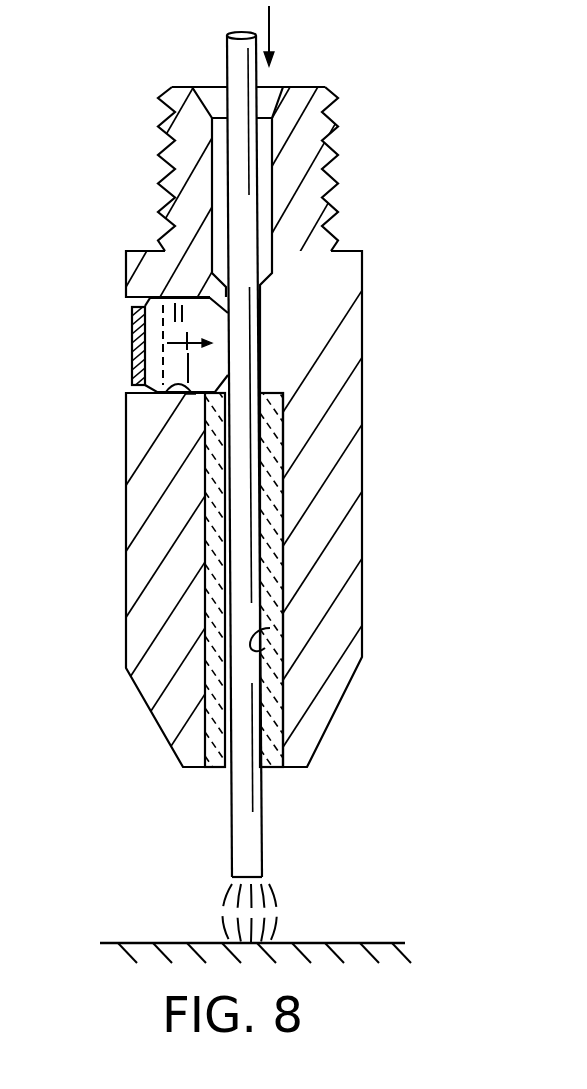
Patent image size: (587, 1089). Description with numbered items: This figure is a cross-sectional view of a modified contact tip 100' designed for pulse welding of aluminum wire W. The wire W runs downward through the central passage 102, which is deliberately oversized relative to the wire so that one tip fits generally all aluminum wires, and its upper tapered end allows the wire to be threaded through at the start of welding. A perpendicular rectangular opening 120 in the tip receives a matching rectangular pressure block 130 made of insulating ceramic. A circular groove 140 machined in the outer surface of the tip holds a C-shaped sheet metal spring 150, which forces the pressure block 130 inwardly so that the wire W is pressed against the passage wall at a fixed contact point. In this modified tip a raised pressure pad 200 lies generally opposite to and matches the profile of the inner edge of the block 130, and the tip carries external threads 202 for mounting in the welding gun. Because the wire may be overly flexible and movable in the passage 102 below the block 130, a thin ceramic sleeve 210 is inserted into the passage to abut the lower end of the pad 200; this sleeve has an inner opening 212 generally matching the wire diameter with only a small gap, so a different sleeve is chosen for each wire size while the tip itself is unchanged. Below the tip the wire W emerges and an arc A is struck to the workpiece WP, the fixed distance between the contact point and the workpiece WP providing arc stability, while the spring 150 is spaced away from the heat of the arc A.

The modified contact tip 100' is at (234, 481).
The central passage 102 is at (194, 545).
The rectangular opening 120 is at (165, 392).
The pressure block 130 is at (183, 405).
The circular groove 140 is at (132, 300).
The C-shaped sheet metal spring 150 is at (120, 354).
The raised pressure pad 200 is at (262, 352).
The threads 202 is at (271, 304).
The ceramic sleeve 210 is at (293, 563).
The inner opening 212 is at (270, 628).
The wire W is at (252, 830).
The arc A is at (273, 897).
The workpiece WP is at (352, 943).